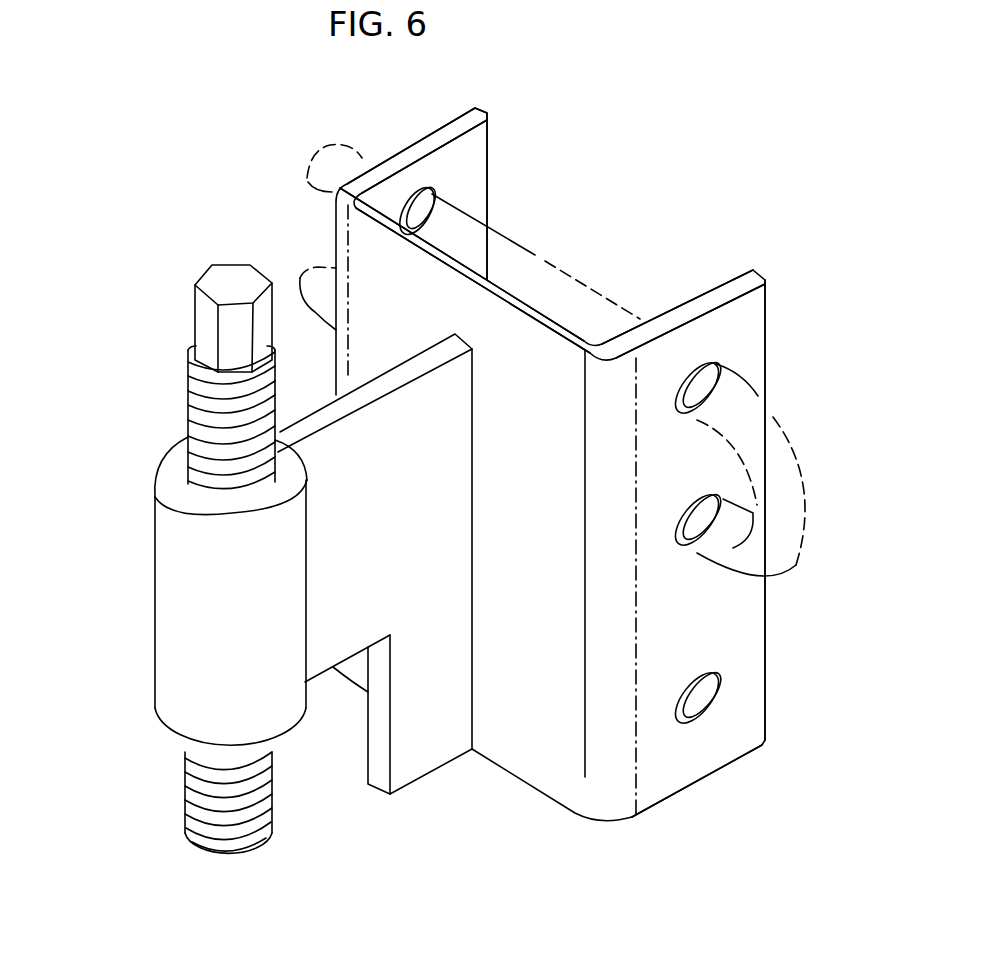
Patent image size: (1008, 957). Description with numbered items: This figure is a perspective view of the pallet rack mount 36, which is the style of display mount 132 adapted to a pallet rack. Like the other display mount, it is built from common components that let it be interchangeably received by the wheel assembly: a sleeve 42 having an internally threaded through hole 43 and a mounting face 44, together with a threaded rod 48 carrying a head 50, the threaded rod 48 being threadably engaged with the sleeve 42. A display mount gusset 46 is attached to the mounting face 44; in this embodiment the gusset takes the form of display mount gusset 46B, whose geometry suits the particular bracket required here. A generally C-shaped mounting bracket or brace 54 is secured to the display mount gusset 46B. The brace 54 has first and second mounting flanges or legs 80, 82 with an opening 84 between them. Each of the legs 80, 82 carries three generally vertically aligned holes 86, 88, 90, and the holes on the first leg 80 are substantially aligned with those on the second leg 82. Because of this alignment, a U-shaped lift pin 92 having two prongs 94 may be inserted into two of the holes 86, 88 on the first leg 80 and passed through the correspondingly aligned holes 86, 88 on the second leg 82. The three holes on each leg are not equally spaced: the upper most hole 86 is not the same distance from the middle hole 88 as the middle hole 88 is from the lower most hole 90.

The display mount 132 is at (252, 157).
The pallet rack mount 36 is at (688, 784).
The sleeve 42 is at (172, 647).
The internally threaded through hole 43 is at (175, 488).
The mounting face 44 is at (303, 456).
The display mount gusset 46 is at (366, 805).
The display mount gusset 46B is at (408, 741).
The threaded rod 48 is at (217, 403).
The head 50 is at (202, 305).
The mounting bracket 54 is at (765, 670).
The first leg 80 is at (752, 710).
The second leg 82 is at (458, 160).
The opening 84 is at (593, 237).
The upper most hole 86 is at (410, 185).
The middle hole 88 is at (687, 497).
The lower most hole 90 is at (695, 680).
The lift pin 92 is at (742, 417).
The prongs 94 is at (345, 148).